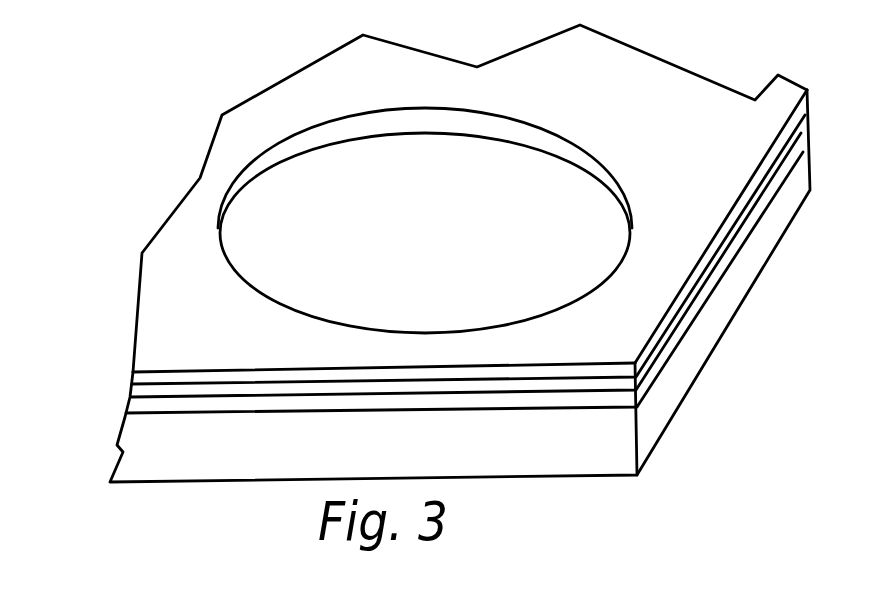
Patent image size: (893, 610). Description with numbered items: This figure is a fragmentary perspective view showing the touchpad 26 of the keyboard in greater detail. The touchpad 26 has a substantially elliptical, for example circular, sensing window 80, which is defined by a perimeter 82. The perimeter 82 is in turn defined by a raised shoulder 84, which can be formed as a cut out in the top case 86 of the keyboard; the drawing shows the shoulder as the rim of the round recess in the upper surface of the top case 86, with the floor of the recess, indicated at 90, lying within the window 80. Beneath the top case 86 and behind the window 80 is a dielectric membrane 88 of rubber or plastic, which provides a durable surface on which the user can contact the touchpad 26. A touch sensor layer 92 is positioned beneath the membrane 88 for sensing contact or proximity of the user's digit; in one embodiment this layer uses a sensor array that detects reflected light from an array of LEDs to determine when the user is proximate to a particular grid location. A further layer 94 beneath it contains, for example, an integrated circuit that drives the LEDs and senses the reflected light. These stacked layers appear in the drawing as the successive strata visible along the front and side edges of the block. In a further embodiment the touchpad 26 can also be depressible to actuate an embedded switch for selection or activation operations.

The touchpad 26 is at (168, 182).
The sensing window 80 is at (376, 196).
The perimeter 82 is at (567, 297).
The raised shoulder 84 is at (507, 133).
The top case 86 is at (260, 128).
The dielectric membrane 88 is at (133, 390).
The recess floor 90 is at (433, 247).
The touch sensor layer 92 is at (127, 407).
The layer 94 is at (117, 445).